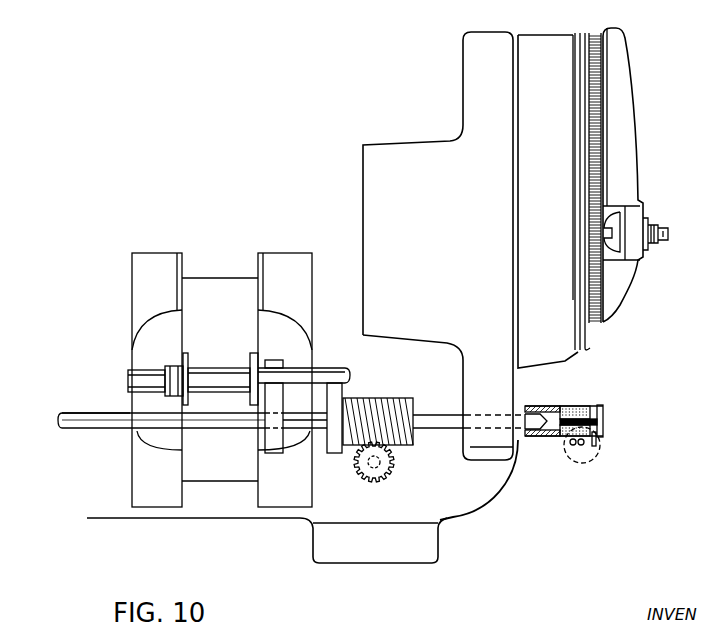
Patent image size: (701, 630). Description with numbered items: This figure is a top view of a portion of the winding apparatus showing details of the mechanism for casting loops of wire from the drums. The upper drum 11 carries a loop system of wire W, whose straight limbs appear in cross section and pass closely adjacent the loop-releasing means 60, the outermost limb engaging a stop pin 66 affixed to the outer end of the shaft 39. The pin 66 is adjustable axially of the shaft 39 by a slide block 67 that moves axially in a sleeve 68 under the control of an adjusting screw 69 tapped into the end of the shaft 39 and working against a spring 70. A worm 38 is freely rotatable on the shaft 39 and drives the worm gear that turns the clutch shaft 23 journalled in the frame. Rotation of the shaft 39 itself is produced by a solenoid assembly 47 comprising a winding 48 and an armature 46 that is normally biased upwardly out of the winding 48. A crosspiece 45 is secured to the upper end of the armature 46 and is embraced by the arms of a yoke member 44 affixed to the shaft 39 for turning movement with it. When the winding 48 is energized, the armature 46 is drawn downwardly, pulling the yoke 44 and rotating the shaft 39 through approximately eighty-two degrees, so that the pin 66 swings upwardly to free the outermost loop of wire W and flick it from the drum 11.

The drum 11 is at (565, 180).
The wire W is at (585, 283).
The winding 48 is at (148, 332).
The armature 46 is at (188, 357).
The crosspiece 45 is at (327, 370).
The yoke member 44 is at (272, 432).
The shaft 39 is at (105, 413).
The solenoid assembly 47 is at (123, 442).
The clutch shaft 23 is at (368, 470).
The worm 38 is at (392, 470).
The sleeve 68 is at (535, 437).
The spring 70 is at (557, 406).
The adjusting screw 69 is at (597, 418).
The slide block 67 is at (603, 407).
The stop pin 66 is at (600, 442).
The terminal T is at (585, 455).
The loop-releasing means 60 is at (583, 375).